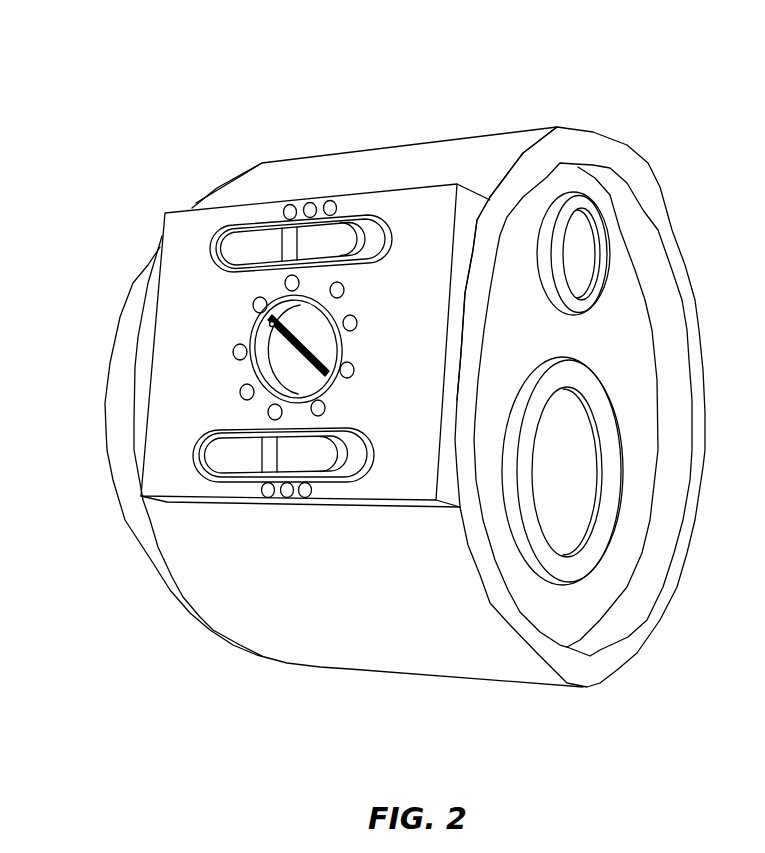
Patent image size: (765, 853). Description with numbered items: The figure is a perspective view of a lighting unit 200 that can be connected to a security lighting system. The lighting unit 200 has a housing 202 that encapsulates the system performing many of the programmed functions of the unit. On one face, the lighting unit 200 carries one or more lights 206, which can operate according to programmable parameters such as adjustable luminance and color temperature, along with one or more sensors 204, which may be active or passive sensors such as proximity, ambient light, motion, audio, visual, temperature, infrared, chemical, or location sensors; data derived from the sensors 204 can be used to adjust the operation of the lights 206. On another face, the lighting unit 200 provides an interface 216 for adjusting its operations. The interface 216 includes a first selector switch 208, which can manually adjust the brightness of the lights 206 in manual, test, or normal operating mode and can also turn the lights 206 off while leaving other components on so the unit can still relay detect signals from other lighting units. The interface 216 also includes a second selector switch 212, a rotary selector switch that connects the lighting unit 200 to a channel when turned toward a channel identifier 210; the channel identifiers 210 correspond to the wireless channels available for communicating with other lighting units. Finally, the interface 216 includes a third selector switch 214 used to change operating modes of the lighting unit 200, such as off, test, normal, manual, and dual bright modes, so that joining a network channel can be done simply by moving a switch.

The lighting unit 200 is at (371, 351).
The housing 202 is at (300, 292).
The sensors 204 is at (553, 266).
The lights 206 is at (574, 459).
The first selector switch 208 is at (285, 209).
The channel identifier 210 is at (265, 347).
The second selector switch 212 is at (329, 348).
The third selector switch 214 is at (283, 504).
The interface 216 is at (465, 244).